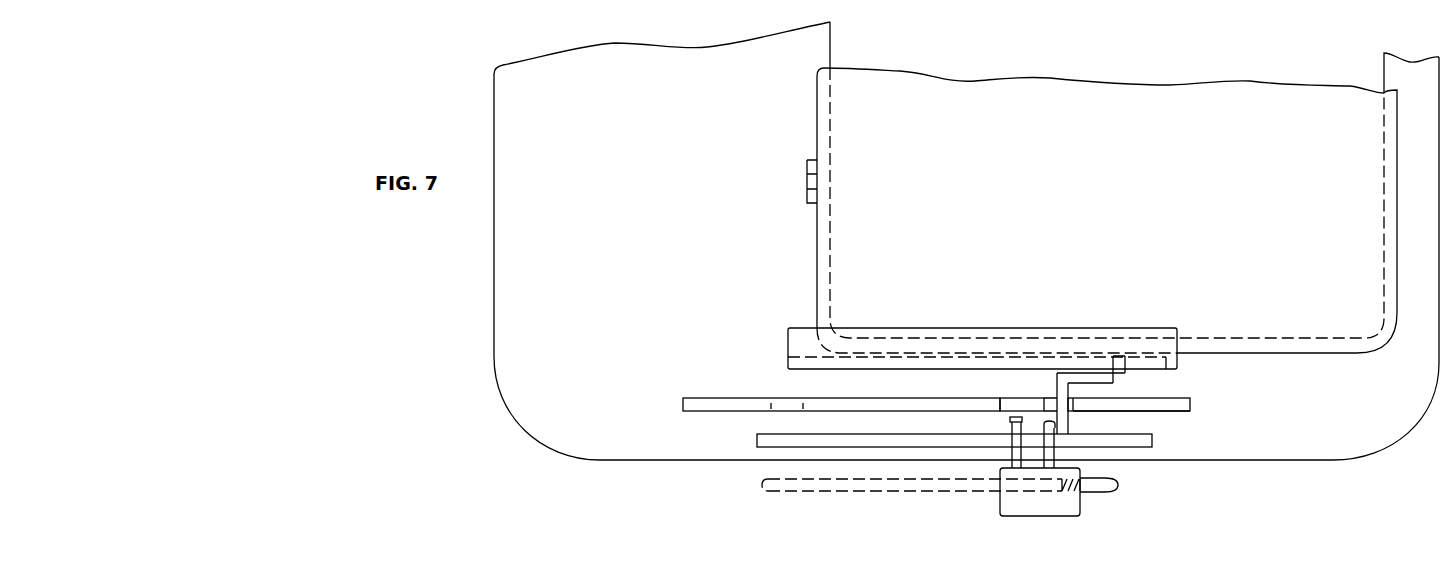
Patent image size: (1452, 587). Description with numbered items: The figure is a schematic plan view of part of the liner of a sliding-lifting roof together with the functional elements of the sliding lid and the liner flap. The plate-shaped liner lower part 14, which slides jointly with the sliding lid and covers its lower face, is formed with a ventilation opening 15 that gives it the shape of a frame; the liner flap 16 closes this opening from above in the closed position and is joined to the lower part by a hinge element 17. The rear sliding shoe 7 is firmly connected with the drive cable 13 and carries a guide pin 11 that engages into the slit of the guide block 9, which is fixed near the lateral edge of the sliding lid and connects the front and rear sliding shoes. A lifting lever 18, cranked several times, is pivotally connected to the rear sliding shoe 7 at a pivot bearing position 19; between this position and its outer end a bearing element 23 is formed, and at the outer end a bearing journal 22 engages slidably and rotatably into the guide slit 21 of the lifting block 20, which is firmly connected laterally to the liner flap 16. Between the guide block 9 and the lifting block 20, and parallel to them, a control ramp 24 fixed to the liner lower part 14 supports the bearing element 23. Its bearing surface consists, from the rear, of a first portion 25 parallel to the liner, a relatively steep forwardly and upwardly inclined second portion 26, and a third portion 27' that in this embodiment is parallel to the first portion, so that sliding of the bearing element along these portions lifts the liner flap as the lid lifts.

The rear sliding shoe 7 is at (1075, 505).
The guide block 9 is at (757, 441).
The guide pin 11 is at (1053, 450).
The cable 13 is at (840, 484).
The liner lower part 14 is at (512, 82).
The ventilation opening 15 is at (1107, 202).
The liner flap 16 is at (1243, 100).
The hinge element 17 is at (806, 181).
The lifting lever 18 is at (1085, 370).
The pivot bearing position 19 is at (1008, 420).
The lifting block 20 is at (904, 328).
The guide slit 21 is at (912, 358).
The bearing journal 22 is at (1124, 374).
The bearing element 23 is at (1064, 418).
The control ramp 24 is at (1193, 398).
The first portion 25 is at (1172, 405).
The second portion 26 is at (1021, 405).
The third portion 27' is at (841, 391).